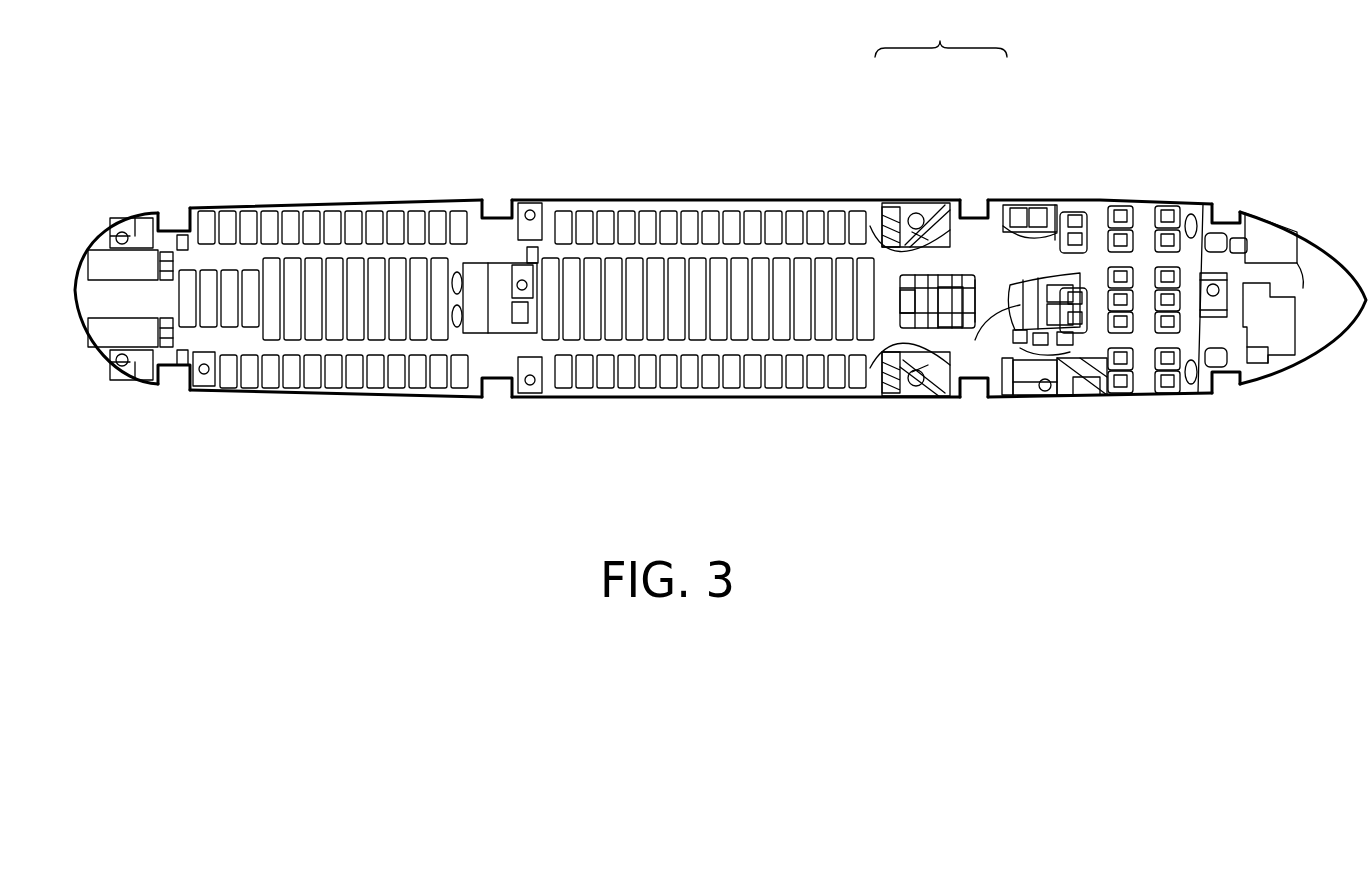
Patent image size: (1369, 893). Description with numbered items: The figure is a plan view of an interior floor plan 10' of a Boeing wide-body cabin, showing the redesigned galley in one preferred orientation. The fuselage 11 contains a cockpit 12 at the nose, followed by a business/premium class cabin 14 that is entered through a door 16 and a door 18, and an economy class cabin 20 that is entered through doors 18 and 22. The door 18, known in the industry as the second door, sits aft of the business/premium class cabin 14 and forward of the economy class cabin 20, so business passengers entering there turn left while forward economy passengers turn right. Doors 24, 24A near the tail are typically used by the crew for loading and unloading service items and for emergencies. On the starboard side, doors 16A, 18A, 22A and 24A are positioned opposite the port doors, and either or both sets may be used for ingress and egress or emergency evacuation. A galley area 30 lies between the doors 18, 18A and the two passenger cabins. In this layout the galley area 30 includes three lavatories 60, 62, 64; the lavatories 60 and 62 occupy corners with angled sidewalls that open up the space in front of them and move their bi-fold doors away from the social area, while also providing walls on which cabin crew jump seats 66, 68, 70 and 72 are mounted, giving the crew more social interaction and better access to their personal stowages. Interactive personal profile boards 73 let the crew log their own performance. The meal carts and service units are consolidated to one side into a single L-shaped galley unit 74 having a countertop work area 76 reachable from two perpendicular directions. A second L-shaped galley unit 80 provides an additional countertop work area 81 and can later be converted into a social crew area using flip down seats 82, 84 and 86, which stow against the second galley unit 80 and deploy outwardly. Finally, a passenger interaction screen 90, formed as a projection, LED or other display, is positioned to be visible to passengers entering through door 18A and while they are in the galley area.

The interior floor plan 10' is at (762, 72).
The fuselage 11 is at (663, 200).
The cockpit 12 is at (1338, 262).
The business/premium class cabin 14 is at (1145, 206).
The door 16 is at (1226, 220).
The door 16A is at (1226, 382).
The door 18 is at (982, 208).
The door 18A is at (978, 398).
The economy class cabin 20 is at (598, 206).
The door 22 is at (498, 210).
The door 22A is at (500, 397).
The door 24 is at (172, 210).
The door 24A is at (178, 384).
The galley area 30 is at (941, 33).
The lavatory 60 is at (885, 204).
The lavatory 62 is at (912, 395).
The lavatory 64 is at (1042, 396).
The cabin crew jump seat 66 is at (950, 204).
The cabin crew jump seat 68 is at (856, 204).
The cabin crew jump seat 70 is at (968, 330).
The cabin crew jump seat 72 is at (862, 392).
The interactive personal profile board 73 is at (922, 204).
The L-shaped galley unit 74 is at (900, 300).
The countertop work area 76 is at (971, 275).
The second L-shaped galley unit 80 is at (1036, 290).
The countertop work area 81 is at (975, 340).
The flip down seat 82 is at (1097, 397).
The flip down seat 84 is at (1070, 395).
The flip down seat 86 is at (1032, 355).
The passenger interaction screen 90 is at (1050, 270).